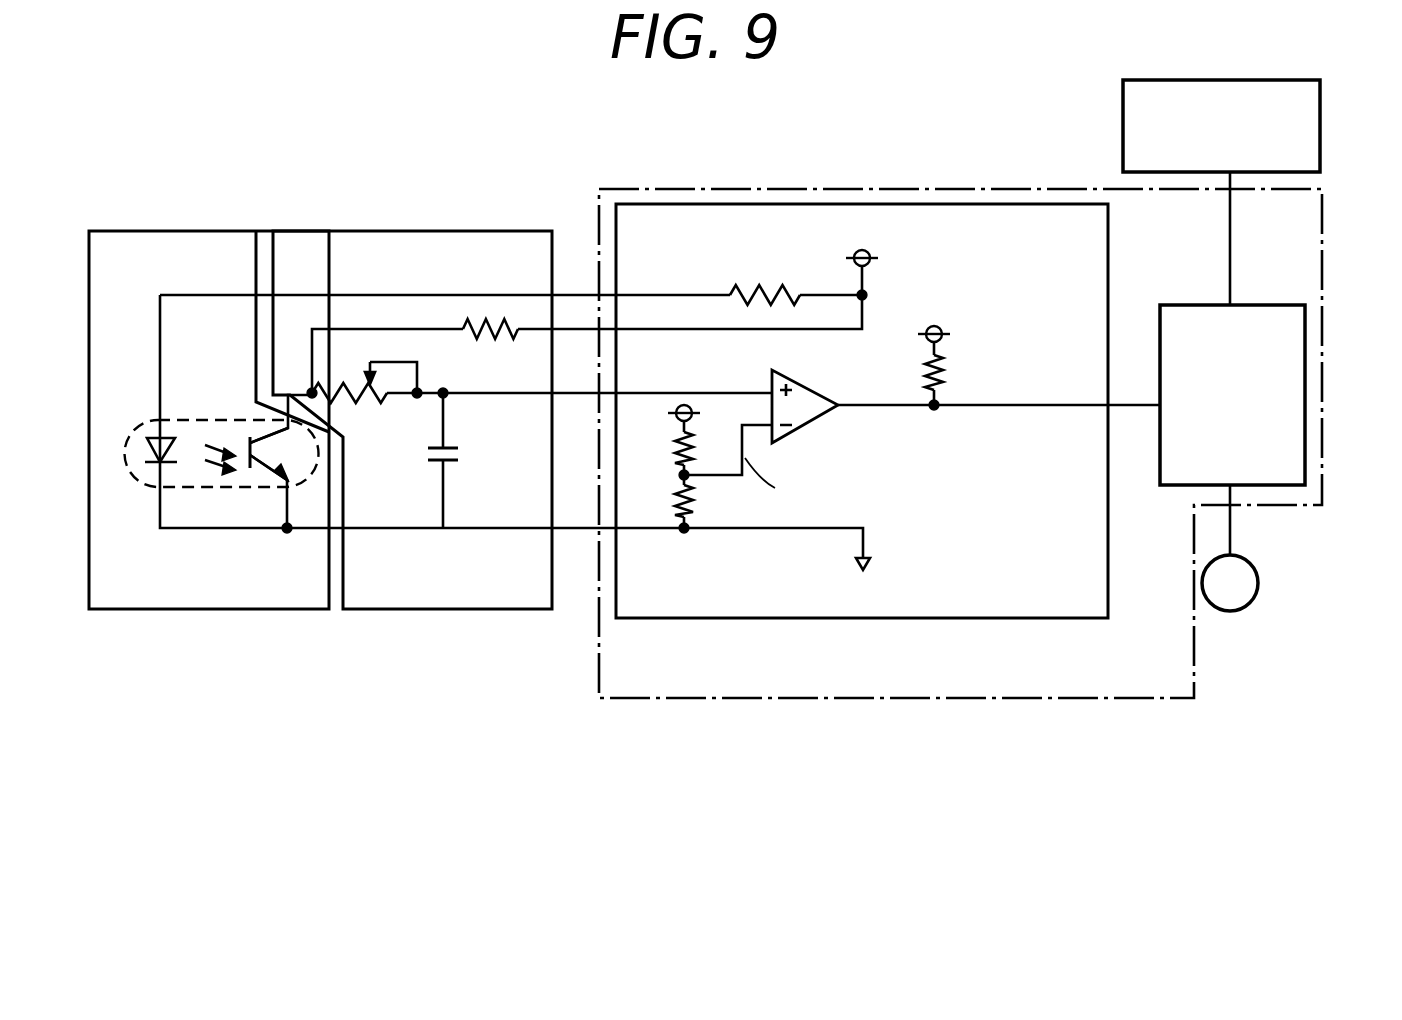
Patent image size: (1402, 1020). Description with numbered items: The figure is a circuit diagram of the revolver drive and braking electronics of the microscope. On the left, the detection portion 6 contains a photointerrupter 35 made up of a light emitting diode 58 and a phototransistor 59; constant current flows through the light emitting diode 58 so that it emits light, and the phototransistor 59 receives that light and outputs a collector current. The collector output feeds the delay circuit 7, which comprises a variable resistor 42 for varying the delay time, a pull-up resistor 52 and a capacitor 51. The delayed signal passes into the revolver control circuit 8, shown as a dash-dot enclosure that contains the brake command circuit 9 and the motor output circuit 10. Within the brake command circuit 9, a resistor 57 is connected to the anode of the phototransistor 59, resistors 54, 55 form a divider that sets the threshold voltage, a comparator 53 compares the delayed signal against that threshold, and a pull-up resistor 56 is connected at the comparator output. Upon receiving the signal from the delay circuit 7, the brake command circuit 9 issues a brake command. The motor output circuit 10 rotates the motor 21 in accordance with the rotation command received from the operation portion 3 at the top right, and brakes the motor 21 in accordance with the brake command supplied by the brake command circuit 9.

The operation portion 3 is at (1320, 95).
The detection portion 6 is at (135, 609).
The delay circuit 7 is at (383, 609).
The revolver control circuit 8 is at (1165, 698).
The brake command circuit 9 is at (771, 618).
The motor output circuit 10 is at (1305, 463).
The motor 21 is at (1255, 603).
The photointerrupter 35 is at (131, 432).
The variable resistor 42 is at (362, 375).
The capacitor 51 is at (452, 446).
The pull-up resistor 52 is at (481, 334).
The comparator 53 is at (820, 420).
The resistor 54 is at (675, 512).
The resistor 55 is at (675, 455).
The pull-up resistor 56 is at (940, 370).
The resistor 57 is at (766, 285).
The light emitting diode 58 is at (150, 447).
The phototransistor 59 is at (260, 428).